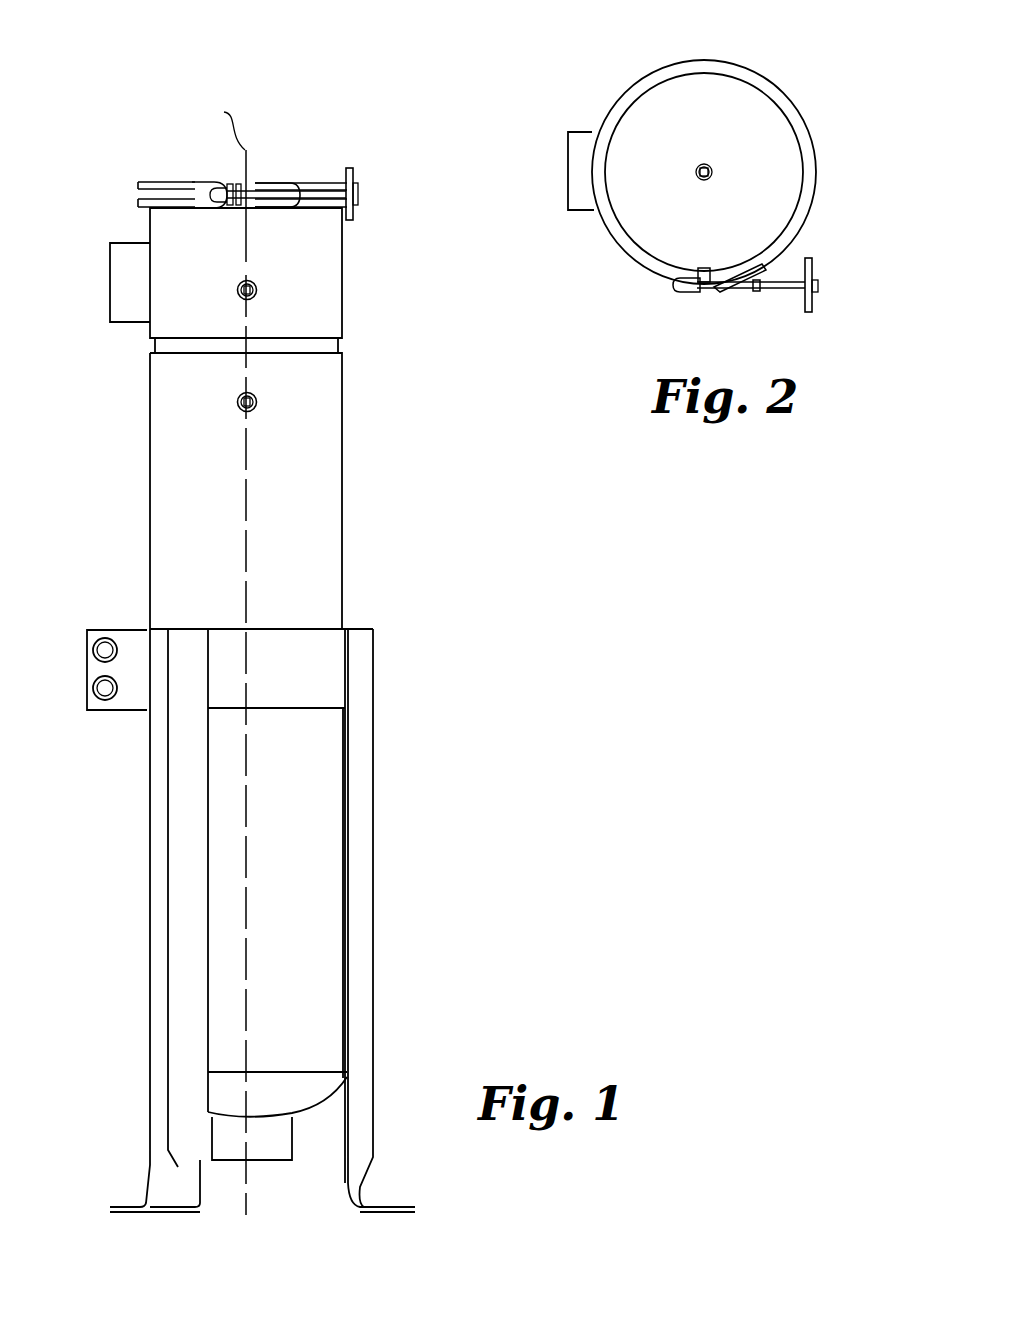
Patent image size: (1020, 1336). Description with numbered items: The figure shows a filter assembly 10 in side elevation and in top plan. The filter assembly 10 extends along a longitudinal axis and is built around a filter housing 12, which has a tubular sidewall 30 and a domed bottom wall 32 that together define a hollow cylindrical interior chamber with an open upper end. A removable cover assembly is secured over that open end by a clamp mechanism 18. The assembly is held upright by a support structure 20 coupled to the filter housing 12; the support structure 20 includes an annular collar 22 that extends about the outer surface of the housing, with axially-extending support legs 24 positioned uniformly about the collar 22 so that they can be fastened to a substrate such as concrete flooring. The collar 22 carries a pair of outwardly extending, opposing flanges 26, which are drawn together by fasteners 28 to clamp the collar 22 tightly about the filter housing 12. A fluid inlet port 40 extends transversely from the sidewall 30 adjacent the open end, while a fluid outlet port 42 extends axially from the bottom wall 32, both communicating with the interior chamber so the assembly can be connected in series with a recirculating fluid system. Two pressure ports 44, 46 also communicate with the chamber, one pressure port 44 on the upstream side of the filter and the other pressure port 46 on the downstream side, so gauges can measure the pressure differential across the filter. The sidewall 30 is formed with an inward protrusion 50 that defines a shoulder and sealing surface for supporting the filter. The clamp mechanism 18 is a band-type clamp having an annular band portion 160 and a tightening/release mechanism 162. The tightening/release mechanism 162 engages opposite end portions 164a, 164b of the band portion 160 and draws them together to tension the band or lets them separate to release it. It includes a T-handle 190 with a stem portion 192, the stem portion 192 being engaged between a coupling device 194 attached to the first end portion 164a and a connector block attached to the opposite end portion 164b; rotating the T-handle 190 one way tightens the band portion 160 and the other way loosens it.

In FIG. 1, the filter assembly 10 is at (420, 761).
In FIG. 1, the filter housing 12 is at (351, 553).
In FIG. 1, the clamp mechanism 18 is at (122, 207).
In FIG. 2, the clamp mechanism 18 is at (811, 238).
In FIG. 1, the support structure 20 is at (378, 839).
In FIG. 1, the collar 22 is at (290, 650).
In FIG. 1, the support legs 24 is at (360, 913).
In FIG. 1, the flanges 26 is at (122, 640).
In FIG. 1, the fasteners 28 is at (92, 688).
In FIG. 1, the tubular sidewall 30 is at (344, 482).
In FIG. 1, the domed bottom wall 32 is at (328, 1102).
In FIG. 1, the fluid inlet port 40 is at (122, 322).
In FIG. 2, the fluid inlet port 40 is at (578, 212).
In FIG. 1, the fluid outlet port 42 is at (225, 1162).
In FIG. 1, the pressure port 44 is at (258, 290).
In FIG. 1, the pressure port 46 is at (258, 402).
In FIG. 1, the protrusion 50 is at (347, 348).
In FIG. 1, the annular band portion 160 is at (143, 178).
In FIG. 2, the annular band portion 160 is at (618, 90).
In FIG. 1, the tightening/release mechanism 162 is at (268, 185).
In FIG. 2, the tightening/release mechanism 162 is at (740, 296).
In FIG. 1, the first end portion 164a is at (181, 180).
In FIG. 2, the first end portion 164a is at (647, 268).
In FIG. 1, the second end portion 164b is at (318, 212).
In FIG. 2, the second end portion 164b is at (797, 243).
In FIG. 1, the T-handle 190 is at (355, 170).
In FIG. 2, the T-handle 190 is at (815, 303).
In FIG. 1, the stem portion 192 is at (318, 184).
In FIG. 2, the stem portion 192 is at (757, 294).
In FIG. 2, the coupling device 194 is at (697, 295).